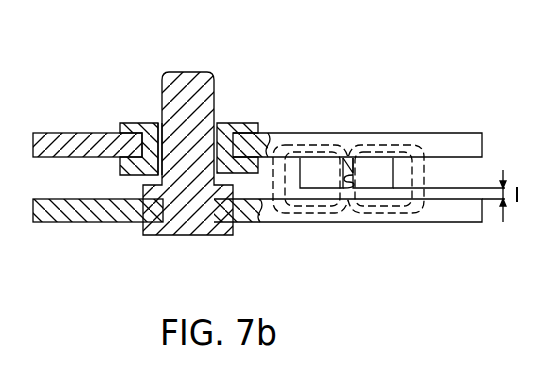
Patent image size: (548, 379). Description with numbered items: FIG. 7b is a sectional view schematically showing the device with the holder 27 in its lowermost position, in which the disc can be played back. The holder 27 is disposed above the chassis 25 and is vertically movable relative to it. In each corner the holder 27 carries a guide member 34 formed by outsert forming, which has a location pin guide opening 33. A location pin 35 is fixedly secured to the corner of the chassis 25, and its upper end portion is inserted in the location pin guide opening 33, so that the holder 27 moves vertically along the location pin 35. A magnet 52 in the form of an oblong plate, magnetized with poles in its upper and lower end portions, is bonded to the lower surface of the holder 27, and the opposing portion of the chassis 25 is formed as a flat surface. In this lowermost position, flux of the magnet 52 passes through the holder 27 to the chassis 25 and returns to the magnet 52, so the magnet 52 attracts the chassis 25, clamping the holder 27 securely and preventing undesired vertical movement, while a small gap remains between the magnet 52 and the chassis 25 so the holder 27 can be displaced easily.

The chassis 25 is at (323, 222).
The holder 27 is at (318, 133).
The location pin guide opening 33 is at (160, 130).
The guide member 34 is at (120, 122).
The location pin 35 is at (193, 78).
The magnet 52 is at (383, 183).